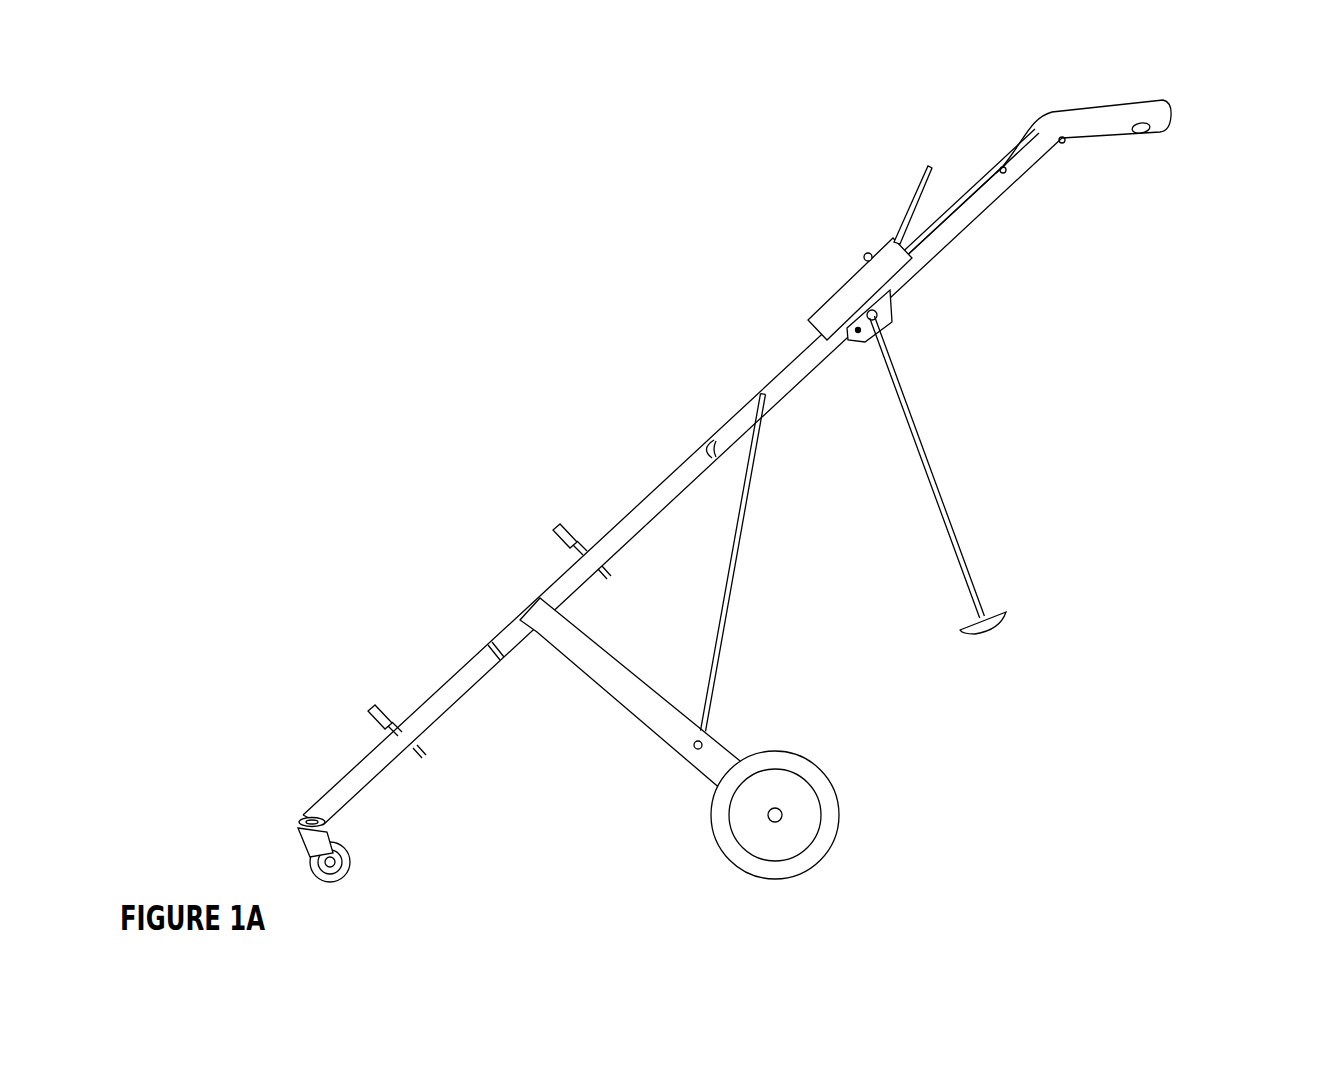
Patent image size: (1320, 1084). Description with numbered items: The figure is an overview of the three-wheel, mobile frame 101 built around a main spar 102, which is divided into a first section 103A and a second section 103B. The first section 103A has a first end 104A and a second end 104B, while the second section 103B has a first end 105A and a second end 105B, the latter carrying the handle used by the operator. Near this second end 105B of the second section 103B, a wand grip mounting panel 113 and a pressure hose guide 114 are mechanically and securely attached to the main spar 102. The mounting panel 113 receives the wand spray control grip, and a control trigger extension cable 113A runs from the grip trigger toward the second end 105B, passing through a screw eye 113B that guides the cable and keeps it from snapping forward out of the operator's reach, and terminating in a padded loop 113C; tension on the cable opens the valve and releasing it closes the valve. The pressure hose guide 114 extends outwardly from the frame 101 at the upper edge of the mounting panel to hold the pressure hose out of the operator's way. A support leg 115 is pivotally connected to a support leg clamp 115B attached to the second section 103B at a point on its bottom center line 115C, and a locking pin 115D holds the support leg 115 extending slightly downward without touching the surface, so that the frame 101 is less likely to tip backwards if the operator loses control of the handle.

The three-wheel, mobile frame 101 is at (662, 220).
The main spar 102 is at (732, 470).
The first section 103A is at (508, 628).
The second section 103B is at (800, 352).
The first end 104A is at (305, 814).
The second end 104B is at (707, 452).
The first end 105A is at (713, 444).
The second end 105B is at (1000, 163).
The wand grip mounting panel 113 is at (866, 254).
The control trigger extension cable 113A is at (1003, 175).
The screw eye 113B is at (1062, 145).
The padded loop 113C is at (1170, 125).
The pressure hose guide 114 is at (930, 168).
The support leg 115 is at (958, 452).
The support leg clamp 115B is at (892, 296).
The bottom center line 115C is at (878, 322).
The locking pin 115D is at (858, 333).